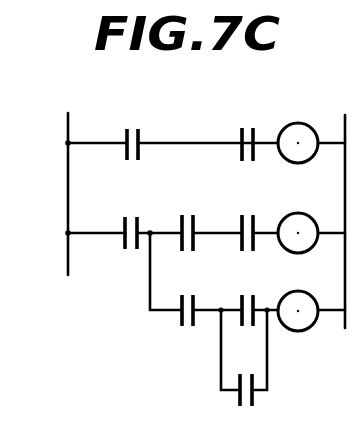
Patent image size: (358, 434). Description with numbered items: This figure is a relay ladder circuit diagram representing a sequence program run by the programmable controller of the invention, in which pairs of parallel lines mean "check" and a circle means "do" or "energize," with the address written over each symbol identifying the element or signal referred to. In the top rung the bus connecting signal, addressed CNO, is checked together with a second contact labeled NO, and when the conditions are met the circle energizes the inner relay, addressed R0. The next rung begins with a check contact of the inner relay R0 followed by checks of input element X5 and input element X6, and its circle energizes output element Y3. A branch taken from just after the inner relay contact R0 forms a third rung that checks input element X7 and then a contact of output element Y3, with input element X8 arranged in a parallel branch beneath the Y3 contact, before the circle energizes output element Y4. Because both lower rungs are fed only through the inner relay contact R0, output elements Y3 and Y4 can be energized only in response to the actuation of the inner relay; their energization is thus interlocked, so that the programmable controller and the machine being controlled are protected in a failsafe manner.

The address of bus connecting signal CNO is at (138, 128).
The normally-open contact NO is at (249, 129).
The address of inner relay R0 is at (216, 173).
The address of input element X5 is at (182, 219).
The address of input element X6 is at (244, 219).
The address of output element Y3 is at (274, 256).
The address of input element X7 is at (189, 296).
The address of output element Y4 is at (298, 299).
The address of input element X8 is at (242, 373).